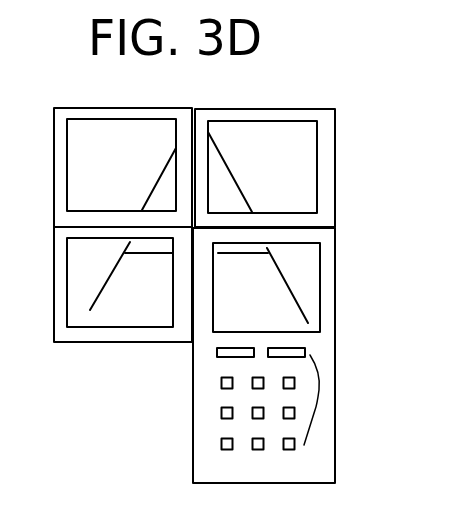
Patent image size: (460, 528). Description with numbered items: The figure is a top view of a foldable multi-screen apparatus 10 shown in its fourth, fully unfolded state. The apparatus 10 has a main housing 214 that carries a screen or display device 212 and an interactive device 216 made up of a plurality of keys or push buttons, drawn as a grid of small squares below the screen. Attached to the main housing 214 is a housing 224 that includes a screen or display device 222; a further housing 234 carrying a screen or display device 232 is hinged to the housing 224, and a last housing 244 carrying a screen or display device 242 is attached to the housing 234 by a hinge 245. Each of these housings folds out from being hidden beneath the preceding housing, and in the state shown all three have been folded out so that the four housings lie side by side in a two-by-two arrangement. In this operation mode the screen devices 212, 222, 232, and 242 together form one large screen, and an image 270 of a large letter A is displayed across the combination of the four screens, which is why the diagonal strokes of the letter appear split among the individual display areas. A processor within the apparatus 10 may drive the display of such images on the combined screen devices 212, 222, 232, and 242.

The modular device 10 is at (203, 264).
The screen or display device 212 is at (307, 273).
The housing 214 is at (337, 320).
The interactive device 216 is at (320, 403).
The screen or display device 222 is at (278, 117).
The housing 224 is at (303, 160).
The screen or display device 232 is at (126, 139).
The housing 234 is at (68, 110).
The screen or display device 242 is at (80, 312).
The housing 244 is at (110, 337).
The hinge 245 is at (78, 225).
The image 270 is at (215, 132).